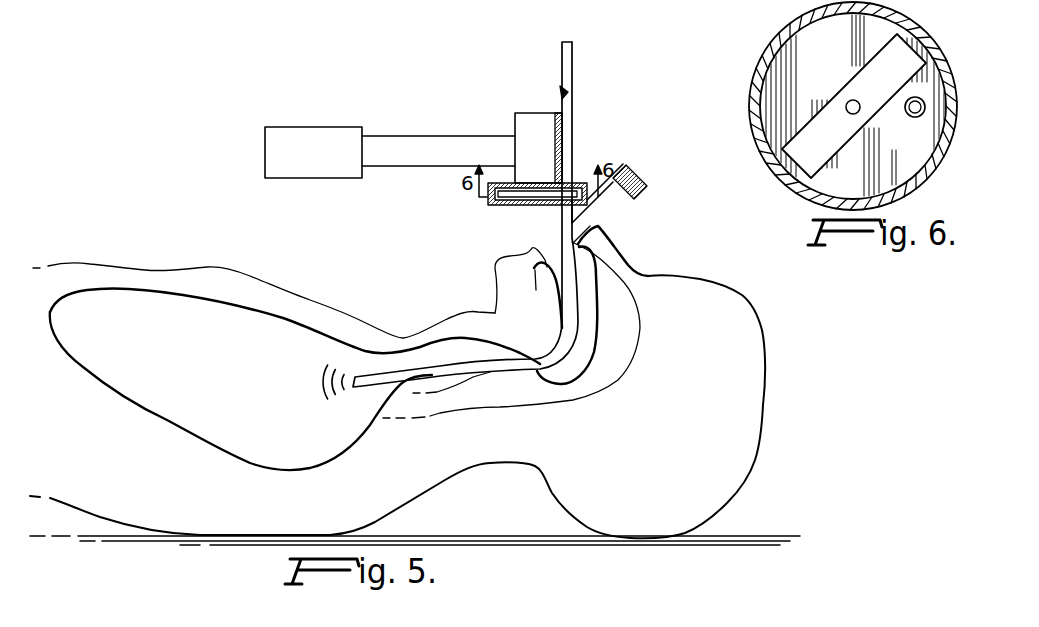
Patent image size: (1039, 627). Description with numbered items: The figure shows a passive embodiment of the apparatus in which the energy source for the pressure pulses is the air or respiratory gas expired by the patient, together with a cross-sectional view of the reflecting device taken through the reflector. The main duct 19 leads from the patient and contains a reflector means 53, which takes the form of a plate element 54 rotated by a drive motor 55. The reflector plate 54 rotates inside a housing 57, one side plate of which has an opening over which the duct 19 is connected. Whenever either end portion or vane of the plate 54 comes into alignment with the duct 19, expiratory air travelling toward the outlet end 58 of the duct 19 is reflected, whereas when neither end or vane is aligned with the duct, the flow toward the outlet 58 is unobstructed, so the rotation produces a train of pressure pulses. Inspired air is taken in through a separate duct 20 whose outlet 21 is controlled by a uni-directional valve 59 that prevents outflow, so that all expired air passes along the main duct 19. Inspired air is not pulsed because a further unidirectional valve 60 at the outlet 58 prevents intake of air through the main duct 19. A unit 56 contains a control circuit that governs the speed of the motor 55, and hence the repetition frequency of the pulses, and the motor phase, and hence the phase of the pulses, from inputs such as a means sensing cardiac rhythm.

In FIG. 5, the duct 19 is at (513, 372).
In FIG. 5, the duct 20 is at (606, 215).
In FIG. 5, the outlet 21 is at (634, 190).
In FIG. 5, the reflector means 53 is at (518, 207).
In FIG. 6, the reflector means 53 is at (766, 35).
In FIG. 5, the plate element 54 is at (490, 207).
In FIG. 6, the plate element 54 is at (838, 97).
In FIG. 5, the drive motor 55 is at (531, 113).
In FIG. 5, the unit 56 is at (308, 130).
In FIG. 5, the housing 57 is at (575, 180).
In FIG. 6, the housing 57 is at (917, 33).
In FIG. 5, the outlet end 58 is at (574, 65).
In FIG. 5, the uni-directional valve 59 is at (637, 171).
In FIG. 5, the unidirectional valve 60 is at (571, 93).